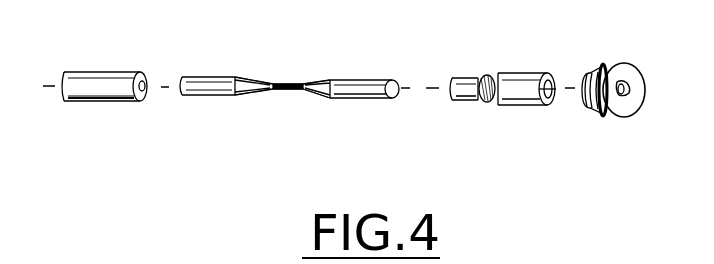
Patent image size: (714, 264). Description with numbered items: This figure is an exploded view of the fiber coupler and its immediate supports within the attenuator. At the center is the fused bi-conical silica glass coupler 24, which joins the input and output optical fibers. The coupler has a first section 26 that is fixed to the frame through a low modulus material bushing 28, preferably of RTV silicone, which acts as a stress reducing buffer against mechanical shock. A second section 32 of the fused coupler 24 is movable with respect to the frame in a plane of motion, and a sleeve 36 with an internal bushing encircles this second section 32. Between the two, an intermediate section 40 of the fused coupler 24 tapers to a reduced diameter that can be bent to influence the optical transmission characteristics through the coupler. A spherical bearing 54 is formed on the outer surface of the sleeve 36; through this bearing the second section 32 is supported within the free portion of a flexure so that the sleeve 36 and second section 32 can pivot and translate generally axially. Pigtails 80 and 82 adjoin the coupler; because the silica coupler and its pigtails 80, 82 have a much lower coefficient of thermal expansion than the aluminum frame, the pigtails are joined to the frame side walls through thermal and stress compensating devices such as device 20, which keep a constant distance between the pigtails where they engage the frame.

The thermal and stress compensating device 20 is at (623, 63).
The fused bi-conical silica glass coupler 24 is at (266, 80).
The first section 26 is at (225, 77).
The bushing 28 is at (120, 71).
The second section 32 is at (364, 88).
The sleeve 36 is at (509, 73).
The intermediate section 40 is at (301, 92).
The spherical bearing 54 is at (489, 103).
The pigtail 80 is at (572, 92).
The pigtail 82 is at (146, 91).